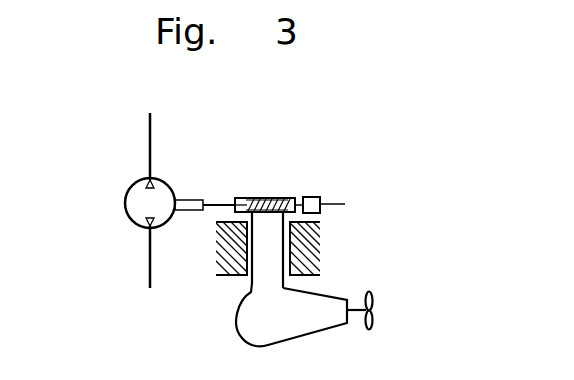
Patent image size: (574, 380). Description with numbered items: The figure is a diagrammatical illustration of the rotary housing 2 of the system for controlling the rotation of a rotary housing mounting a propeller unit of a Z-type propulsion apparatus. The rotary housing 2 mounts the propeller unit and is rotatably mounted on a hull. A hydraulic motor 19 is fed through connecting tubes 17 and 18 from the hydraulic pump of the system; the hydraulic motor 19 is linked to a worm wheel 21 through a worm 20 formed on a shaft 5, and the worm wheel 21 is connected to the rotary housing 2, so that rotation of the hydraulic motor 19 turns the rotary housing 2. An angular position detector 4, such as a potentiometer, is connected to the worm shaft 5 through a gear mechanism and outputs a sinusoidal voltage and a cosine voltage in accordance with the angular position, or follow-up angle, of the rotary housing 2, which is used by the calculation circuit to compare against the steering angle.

The rotary housing 2 is at (250, 283).
The angular position detector 4 is at (345, 204).
The worm shaft 5 is at (222, 199).
The connecting tube 17 is at (152, 258).
The connecting tube 18 is at (151, 150).
The hydraulic motor 19 is at (129, 218).
The worm 20 is at (263, 197).
The worm wheel 21 is at (288, 196).